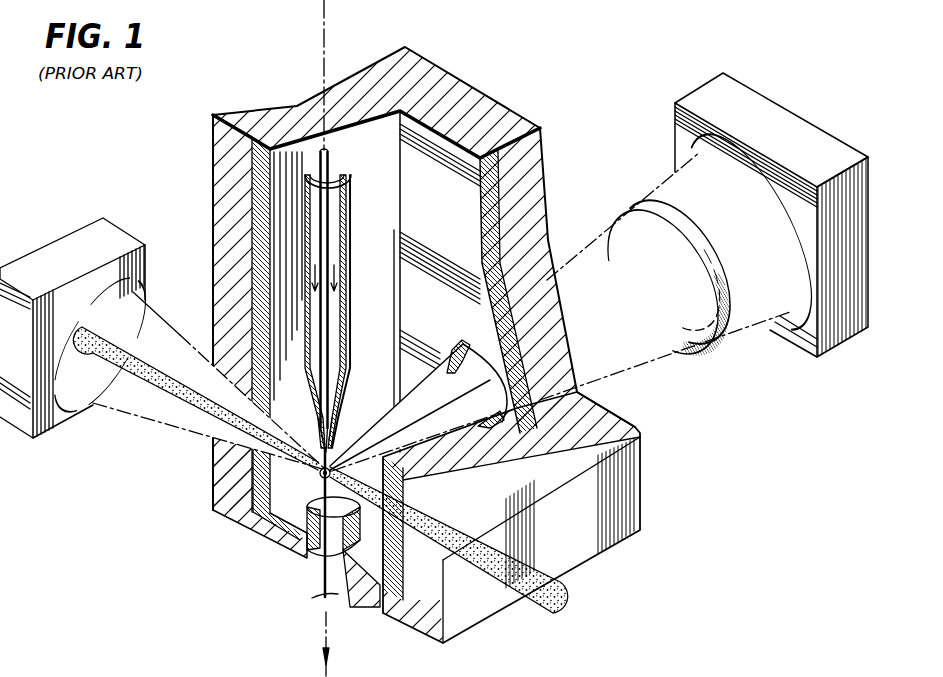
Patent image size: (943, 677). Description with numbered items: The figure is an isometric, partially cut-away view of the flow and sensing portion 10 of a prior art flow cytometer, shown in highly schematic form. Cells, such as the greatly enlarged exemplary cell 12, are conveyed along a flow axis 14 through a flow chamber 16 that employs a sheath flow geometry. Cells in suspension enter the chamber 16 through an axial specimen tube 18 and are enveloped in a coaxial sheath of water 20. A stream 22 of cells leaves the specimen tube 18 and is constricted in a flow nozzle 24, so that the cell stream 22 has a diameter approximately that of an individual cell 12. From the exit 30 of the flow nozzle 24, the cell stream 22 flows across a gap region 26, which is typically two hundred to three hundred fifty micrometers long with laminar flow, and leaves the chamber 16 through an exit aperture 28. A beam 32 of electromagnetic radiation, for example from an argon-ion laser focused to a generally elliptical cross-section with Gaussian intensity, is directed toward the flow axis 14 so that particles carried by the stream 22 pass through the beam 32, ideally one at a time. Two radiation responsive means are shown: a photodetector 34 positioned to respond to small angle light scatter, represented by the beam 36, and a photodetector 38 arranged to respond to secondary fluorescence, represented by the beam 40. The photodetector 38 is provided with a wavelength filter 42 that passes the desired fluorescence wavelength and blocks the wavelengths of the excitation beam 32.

The flow and sensing portion 10 is at (143, 470).
The cell 12 is at (334, 473).
The flow axis 14 is at (322, 28).
The flow chamber 16 is at (447, 207).
The axial specimen tube 18 is at (348, 186).
The coaxial sheath of water 20 is at (350, 305).
The stream of cells in suspension 22 is at (333, 449).
The flow nozzle 24 is at (314, 412).
The gap region 26 is at (290, 470).
The exit aperture 28 is at (285, 530).
The exit of the flow nozzle 30 is at (320, 446).
The beam of electromagnetic radiation 32 is at (565, 600).
The photodetector 34 is at (118, 236).
The small angle light scatter beam 36 is at (164, 320).
The photodetector 38 is at (753, 112).
The secondary fluorescence beam 40 is at (573, 260).
The wavelength filter 42 is at (630, 208).